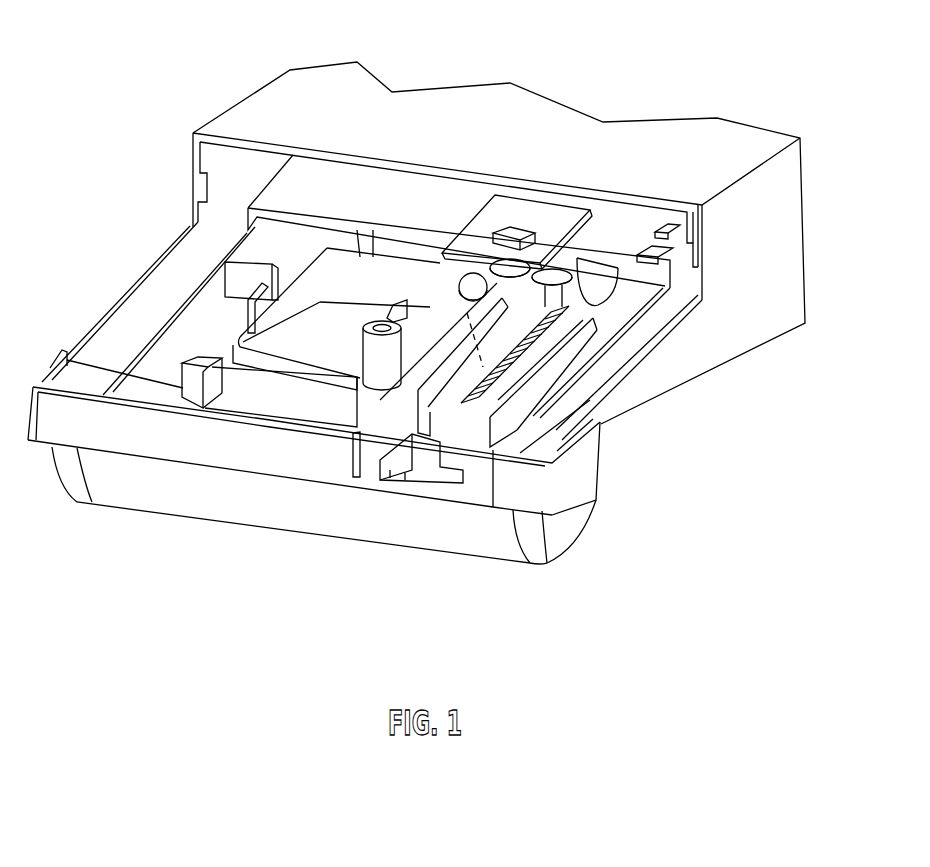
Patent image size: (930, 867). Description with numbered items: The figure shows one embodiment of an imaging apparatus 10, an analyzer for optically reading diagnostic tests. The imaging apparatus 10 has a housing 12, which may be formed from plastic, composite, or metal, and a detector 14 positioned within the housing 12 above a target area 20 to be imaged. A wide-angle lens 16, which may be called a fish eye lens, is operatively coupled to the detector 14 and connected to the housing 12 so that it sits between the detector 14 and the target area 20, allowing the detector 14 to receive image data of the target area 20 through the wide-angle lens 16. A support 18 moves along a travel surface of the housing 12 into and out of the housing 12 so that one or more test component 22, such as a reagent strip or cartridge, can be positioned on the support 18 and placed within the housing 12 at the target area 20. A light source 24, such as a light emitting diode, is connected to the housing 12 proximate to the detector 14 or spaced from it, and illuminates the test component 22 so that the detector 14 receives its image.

The imaging apparatus 10 is at (155, 44).
The housing 12 is at (740, 350).
The detector 14 is at (517, 233).
The wide-angle lens 16 is at (557, 247).
The support 18 is at (490, 417).
The target area 20 is at (533, 362).
The test component 22 is at (450, 428).
The light source 24 is at (470, 280).